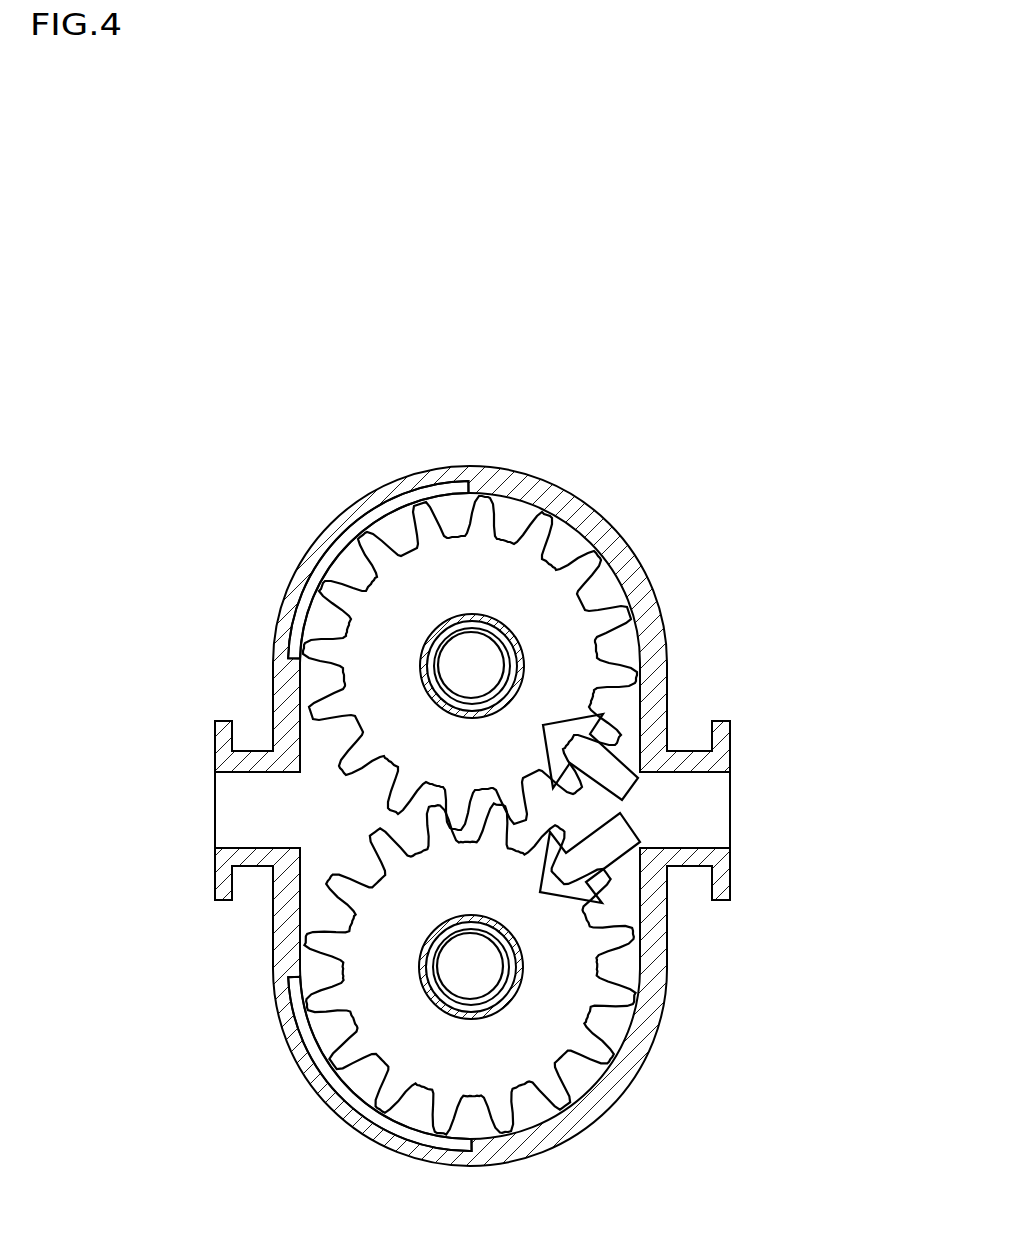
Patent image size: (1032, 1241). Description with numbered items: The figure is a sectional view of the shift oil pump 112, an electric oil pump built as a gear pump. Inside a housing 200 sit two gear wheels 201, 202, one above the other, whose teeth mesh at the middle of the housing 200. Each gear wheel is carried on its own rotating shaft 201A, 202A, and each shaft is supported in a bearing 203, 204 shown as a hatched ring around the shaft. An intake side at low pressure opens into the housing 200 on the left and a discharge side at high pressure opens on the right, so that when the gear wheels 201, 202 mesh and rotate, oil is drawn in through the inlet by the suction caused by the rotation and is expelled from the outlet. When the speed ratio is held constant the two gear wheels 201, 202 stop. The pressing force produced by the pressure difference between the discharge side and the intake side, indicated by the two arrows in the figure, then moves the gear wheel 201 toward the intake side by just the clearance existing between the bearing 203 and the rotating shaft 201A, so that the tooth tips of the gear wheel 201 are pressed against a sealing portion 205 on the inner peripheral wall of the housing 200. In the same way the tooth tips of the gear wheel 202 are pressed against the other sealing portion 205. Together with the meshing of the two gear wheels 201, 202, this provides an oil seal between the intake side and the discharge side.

The shift oil pump 112 is at (473, 774).
The housing 200 is at (490, 477).
The gear wheel 201 is at (593, 618).
The rotating shaft 201A is at (483, 655).
The gear wheel 202 is at (602, 947).
The rotating shaft 202A is at (477, 982).
The bearing 203 is at (526, 668).
The bearing 204 is at (506, 1012).
The sealing portion 205 is at (328, 556).